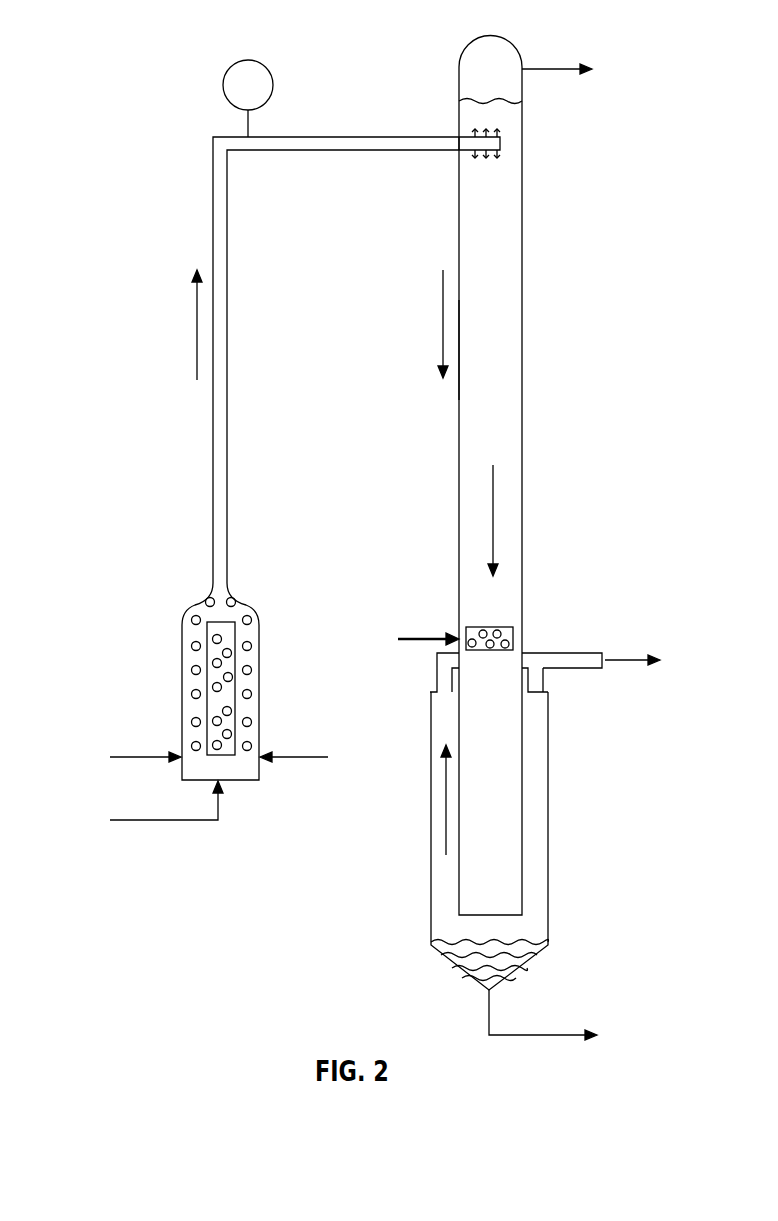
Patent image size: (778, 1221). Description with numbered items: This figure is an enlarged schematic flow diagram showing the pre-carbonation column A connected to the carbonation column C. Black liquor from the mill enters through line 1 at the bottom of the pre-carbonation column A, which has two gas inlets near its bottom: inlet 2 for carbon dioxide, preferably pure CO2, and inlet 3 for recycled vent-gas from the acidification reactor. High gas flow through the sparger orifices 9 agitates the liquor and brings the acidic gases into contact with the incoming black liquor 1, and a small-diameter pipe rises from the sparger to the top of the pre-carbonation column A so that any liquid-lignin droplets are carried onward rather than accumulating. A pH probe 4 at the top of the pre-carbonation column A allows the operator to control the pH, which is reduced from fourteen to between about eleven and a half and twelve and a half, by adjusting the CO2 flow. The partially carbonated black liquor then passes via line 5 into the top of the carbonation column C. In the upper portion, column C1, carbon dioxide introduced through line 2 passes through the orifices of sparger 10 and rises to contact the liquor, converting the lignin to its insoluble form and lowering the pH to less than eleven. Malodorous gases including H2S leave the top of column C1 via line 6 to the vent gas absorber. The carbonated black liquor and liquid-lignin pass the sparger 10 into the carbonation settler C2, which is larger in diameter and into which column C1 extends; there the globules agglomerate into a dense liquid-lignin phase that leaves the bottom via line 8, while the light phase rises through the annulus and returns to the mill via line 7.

The line 1 is at (173, 822).
The inlet 2 is at (293, 757).
The inlet 3 is at (150, 757).
The pH probe 4 is at (222, 88).
The line 5 is at (310, 137).
The line 6 is at (548, 69).
The line 7 is at (565, 653).
The line 8 is at (535, 1035).
The sparger orifices 9 is at (237, 688).
The sparger 10 is at (500, 627).
The pre-carbonation column A is at (155, 655).
The carbonation column C is at (560, 281).
The upper portion of the carbonation column C1 is at (507, 349).
The carbonation settler C2 is at (540, 971).